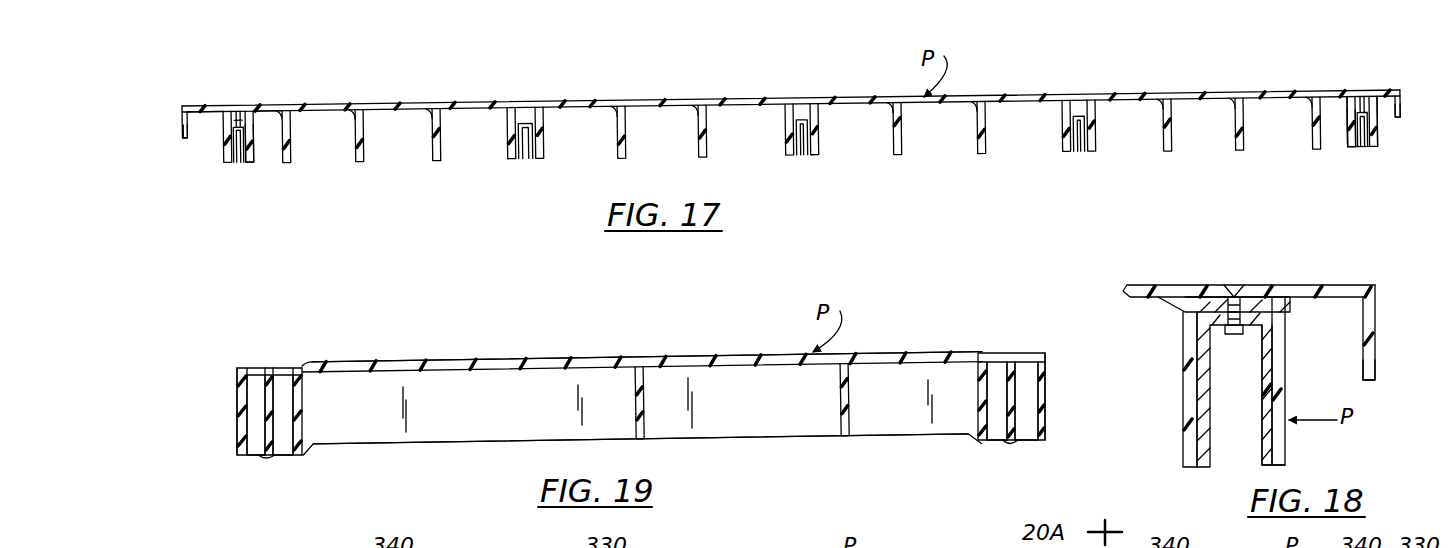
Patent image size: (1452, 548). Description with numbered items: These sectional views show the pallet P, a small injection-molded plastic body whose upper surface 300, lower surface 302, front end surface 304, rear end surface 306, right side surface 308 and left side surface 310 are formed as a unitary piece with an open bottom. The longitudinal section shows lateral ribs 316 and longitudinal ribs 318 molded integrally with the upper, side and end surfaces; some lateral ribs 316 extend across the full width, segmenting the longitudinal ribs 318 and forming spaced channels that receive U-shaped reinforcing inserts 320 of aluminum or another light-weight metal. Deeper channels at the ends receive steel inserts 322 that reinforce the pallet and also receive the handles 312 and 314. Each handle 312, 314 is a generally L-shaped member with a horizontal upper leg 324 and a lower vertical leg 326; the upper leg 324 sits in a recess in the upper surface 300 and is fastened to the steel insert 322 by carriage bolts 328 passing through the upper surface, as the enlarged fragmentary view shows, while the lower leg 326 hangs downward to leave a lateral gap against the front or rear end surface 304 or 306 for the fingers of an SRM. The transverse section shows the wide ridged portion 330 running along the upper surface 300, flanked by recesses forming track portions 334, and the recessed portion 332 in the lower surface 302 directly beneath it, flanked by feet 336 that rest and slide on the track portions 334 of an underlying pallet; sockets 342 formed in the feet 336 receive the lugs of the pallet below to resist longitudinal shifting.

In FIG. 17, the upper surface 300 is at (621, 103).
In FIG. 18, the upper surface 300 is at (1192, 268).
In FIG. 17, the lower surface 302 is at (432, 154).
In FIG. 17, the front end surface 304 is at (226, 163).
In FIG. 17, the rear end surface 306 is at (1371, 146).
In FIG. 19, the rear end surface 306 is at (537, 419).
In FIG. 18, the rear end surface 306 is at (1287, 443).
In FIG. 19, the right side surface 308 is at (1047, 375).
In FIG. 19, the left side surface 310 is at (237, 423).
In FIG. 17, the handle 312 is at (183, 101).
In FIG. 17, the handle 314 is at (1435, 60).
In FIG. 17, the lateral ribs 316 is at (980, 143).
In FIG. 18, the lateral ribs 316 is at (1183, 340).
In FIG. 19, the longitudinal ribs 318 is at (302, 396).
In FIG. 17, the U-shaped reinforcing inserts 320 is at (527, 124).
In FIG. 17, the steel inserts 322 is at (247, 164).
In FIG. 18, the steel inserts 322 is at (1266, 461).
In FIG. 17, the horizontal upper leg 324 is at (218, 105).
In FIG. 18, the horizontal upper leg 324 is at (1360, 283).
In FIG. 17, the lower vertical leg 326 is at (183, 138).
In FIG. 18, the lower vertical leg 326 is at (1375, 363).
In FIG. 18, the carriage bolts 328 is at (1235, 284).
In FIG. 19, the ridged portion 330 is at (705, 330).
In FIG. 19, the recessed portion 332 is at (703, 441).
In FIG. 19, the track portions 334 is at (264, 368).
In FIG. 19, the feet 336 is at (285, 457).
In FIG. 19, the sockets 342 is at (265, 457).